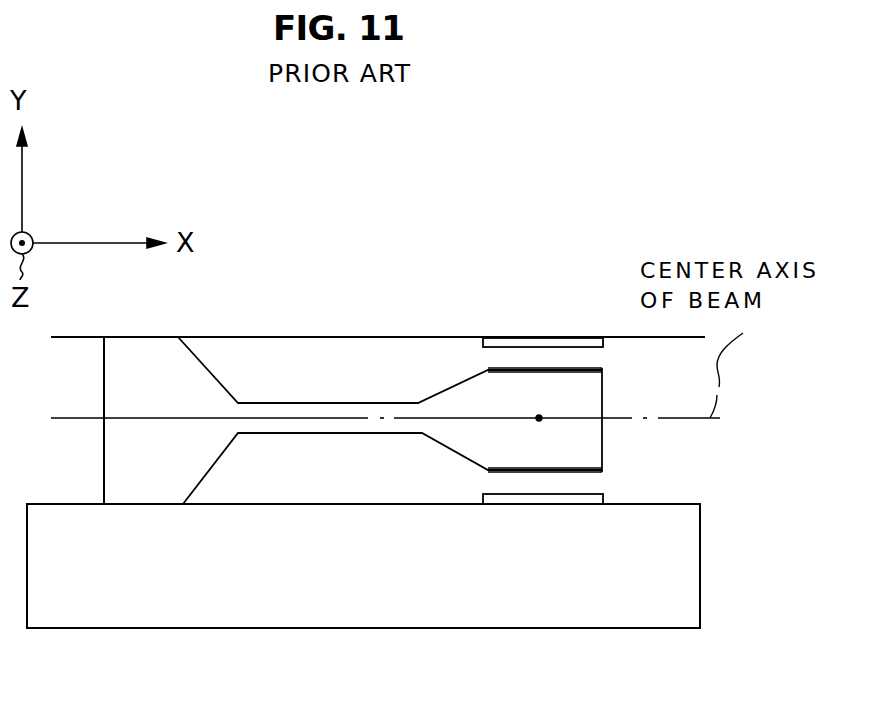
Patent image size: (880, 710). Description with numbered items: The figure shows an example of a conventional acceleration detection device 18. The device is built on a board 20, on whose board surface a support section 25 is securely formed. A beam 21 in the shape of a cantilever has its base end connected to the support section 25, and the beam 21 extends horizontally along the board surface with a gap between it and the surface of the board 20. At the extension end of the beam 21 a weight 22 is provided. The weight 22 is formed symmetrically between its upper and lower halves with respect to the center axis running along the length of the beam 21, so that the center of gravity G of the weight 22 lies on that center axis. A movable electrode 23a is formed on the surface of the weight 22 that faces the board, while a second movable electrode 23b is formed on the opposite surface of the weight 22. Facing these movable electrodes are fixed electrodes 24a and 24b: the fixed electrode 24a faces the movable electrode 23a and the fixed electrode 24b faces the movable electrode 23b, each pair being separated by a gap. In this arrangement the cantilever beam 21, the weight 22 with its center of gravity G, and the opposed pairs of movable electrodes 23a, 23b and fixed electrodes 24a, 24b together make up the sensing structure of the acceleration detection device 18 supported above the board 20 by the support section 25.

The acceleration detection device 18 is at (529, 265).
The board 20 is at (328, 607).
The beam 21 is at (293, 412).
The weight 22 is at (463, 447).
The movable electrode 23a is at (585, 474).
The movable electrode 23b is at (585, 367).
The fixed electrode 24a is at (560, 504).
The fixed electrode 24b is at (547, 337).
The support section 25 is at (104, 460).
The center of gravity G is at (539, 418).